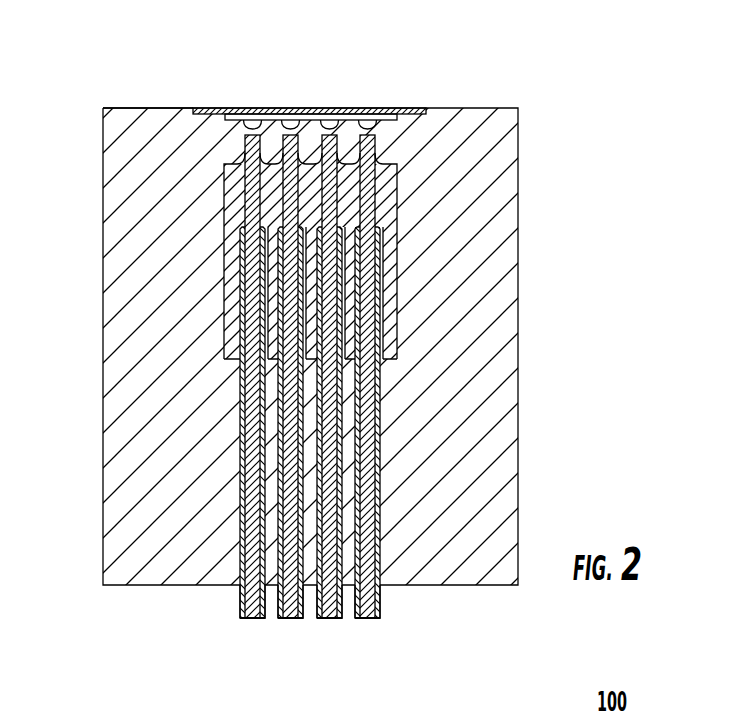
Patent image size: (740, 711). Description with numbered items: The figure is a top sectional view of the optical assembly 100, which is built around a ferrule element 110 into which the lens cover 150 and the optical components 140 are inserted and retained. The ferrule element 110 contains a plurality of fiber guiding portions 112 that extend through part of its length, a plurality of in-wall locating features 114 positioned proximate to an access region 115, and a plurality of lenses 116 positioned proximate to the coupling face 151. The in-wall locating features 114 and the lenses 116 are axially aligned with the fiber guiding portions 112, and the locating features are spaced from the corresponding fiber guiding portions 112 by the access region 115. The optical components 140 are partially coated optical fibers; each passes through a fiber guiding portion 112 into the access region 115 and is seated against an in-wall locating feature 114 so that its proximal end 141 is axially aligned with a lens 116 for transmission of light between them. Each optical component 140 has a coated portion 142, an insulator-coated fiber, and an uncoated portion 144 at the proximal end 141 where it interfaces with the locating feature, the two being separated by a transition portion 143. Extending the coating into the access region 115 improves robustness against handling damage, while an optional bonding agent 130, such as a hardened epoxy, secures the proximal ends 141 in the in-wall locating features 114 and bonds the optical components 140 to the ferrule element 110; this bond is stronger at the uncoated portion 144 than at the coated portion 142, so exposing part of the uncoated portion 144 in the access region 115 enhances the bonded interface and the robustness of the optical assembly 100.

The optical assembly 100 is at (597, 71).
The ferrule element 110 is at (531, 313).
The fiber guiding portions 112 is at (246, 558).
The in-wall locating features 114 is at (247, 153).
The access region 115 is at (398, 347).
The lenses 116 is at (266, 118).
The bonding agent 130 is at (397, 203).
The optical components 140 is at (367, 630).
The proximal ends 141 is at (244, 133).
The coated portion 142 is at (377, 267).
The transition portion 143 is at (237, 228).
The uncoated portion 144 is at (322, 122).
The lens cover 150 is at (420, 113).
The coupling face 151 is at (120, 108).